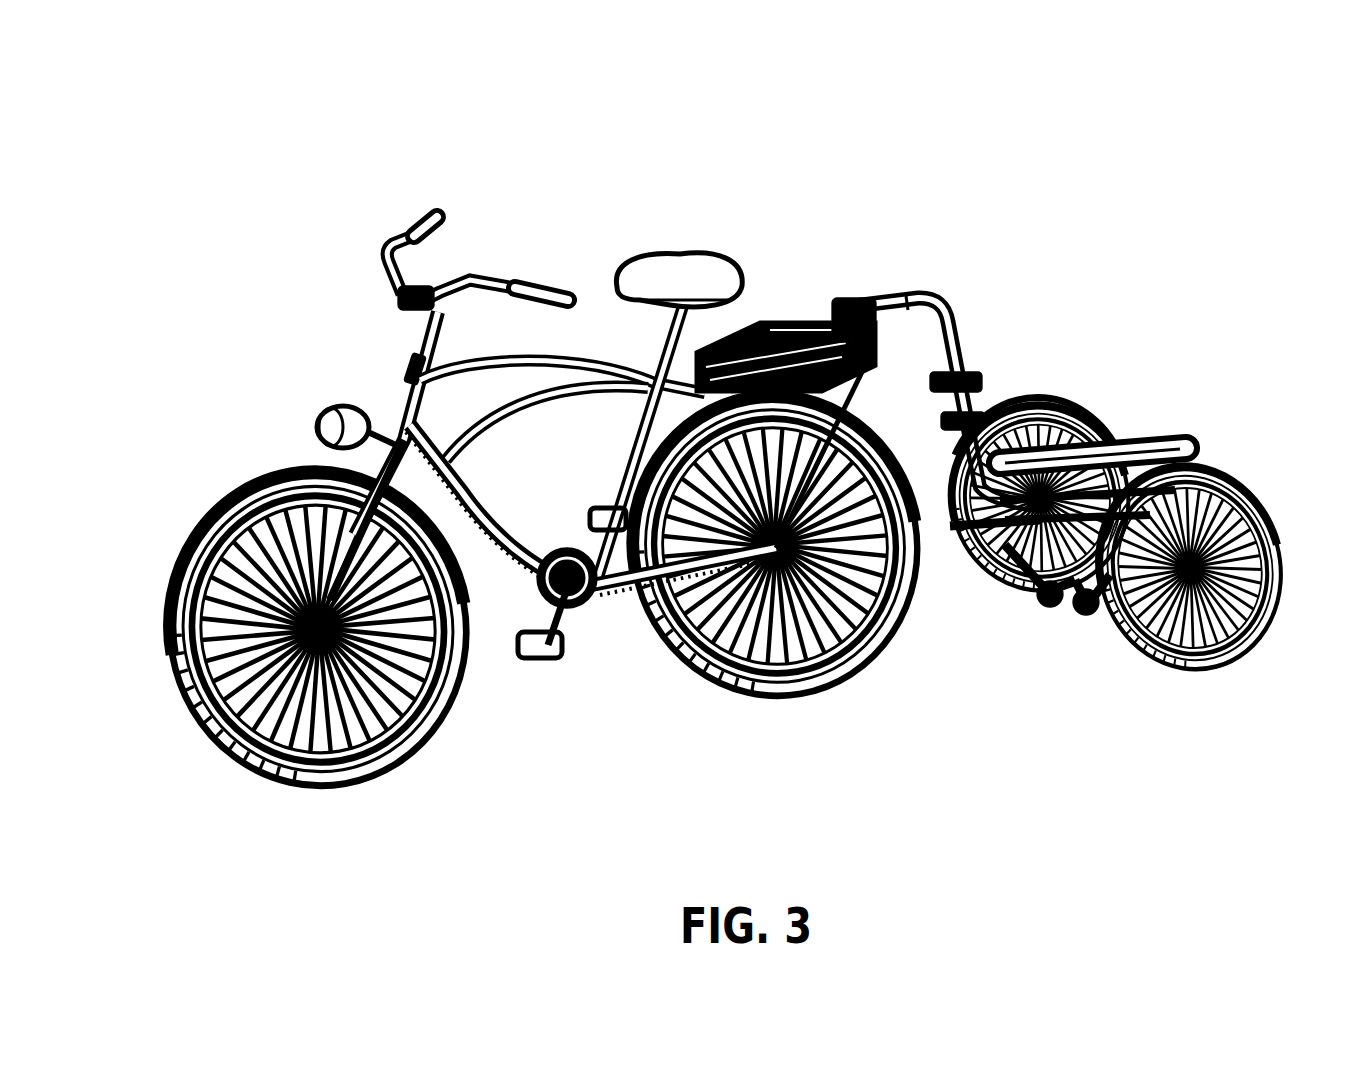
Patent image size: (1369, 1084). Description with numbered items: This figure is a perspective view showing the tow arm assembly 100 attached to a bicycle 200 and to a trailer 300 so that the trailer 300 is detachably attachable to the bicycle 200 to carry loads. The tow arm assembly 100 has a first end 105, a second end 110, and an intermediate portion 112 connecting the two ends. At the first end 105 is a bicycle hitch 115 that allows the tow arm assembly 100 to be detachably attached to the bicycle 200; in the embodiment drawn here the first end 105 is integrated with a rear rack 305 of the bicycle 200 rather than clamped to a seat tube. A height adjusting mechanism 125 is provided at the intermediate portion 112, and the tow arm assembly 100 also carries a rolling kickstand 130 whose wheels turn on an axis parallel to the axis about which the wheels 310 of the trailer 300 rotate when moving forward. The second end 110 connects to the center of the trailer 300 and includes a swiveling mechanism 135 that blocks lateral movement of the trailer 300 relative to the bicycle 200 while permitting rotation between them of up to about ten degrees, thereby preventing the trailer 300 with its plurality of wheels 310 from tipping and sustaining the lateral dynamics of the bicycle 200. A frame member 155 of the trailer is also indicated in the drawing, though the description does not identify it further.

The bicycle 200 is at (210, 229).
The rear rack 305 is at (798, 325).
The trailer 300 is at (1166, 297).
The tow arm assembly 100 is at (965, 234).
The first end 105 is at (875, 232).
The bicycle hitch 115 is at (842, 285).
The intermediate portion 112 is at (966, 304).
The height adjusting mechanism 125 is at (977, 334).
The frame member 155 is at (950, 526).
The second end 110 is at (1050, 370).
The wheels 310 is at (1087, 393).
The rolling kickstand 130 is at (1026, 645).
The swiveling mechanism 135 is at (1069, 637).